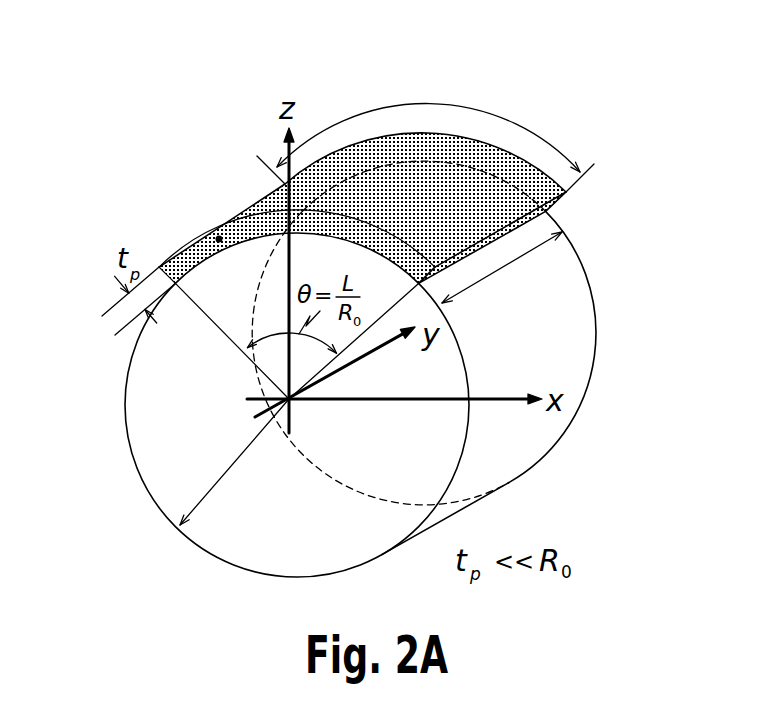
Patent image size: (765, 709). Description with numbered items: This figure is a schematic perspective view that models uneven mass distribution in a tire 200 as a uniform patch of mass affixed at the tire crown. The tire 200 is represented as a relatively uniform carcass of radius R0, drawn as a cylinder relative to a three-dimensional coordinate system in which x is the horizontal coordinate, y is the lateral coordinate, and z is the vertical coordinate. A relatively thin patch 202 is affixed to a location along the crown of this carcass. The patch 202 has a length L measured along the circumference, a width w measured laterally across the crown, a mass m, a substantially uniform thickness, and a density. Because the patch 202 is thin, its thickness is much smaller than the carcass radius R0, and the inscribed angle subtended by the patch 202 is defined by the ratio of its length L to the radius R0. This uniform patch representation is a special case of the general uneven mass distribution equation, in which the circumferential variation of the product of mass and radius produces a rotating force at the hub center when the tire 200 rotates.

The tire 200 is at (596, 332).
The patch 202 is at (568, 199).
The mass m is at (219, 239).
The length L is at (425, 131).
The width w is at (502, 267).
The carcass radius R0 is at (234, 462).